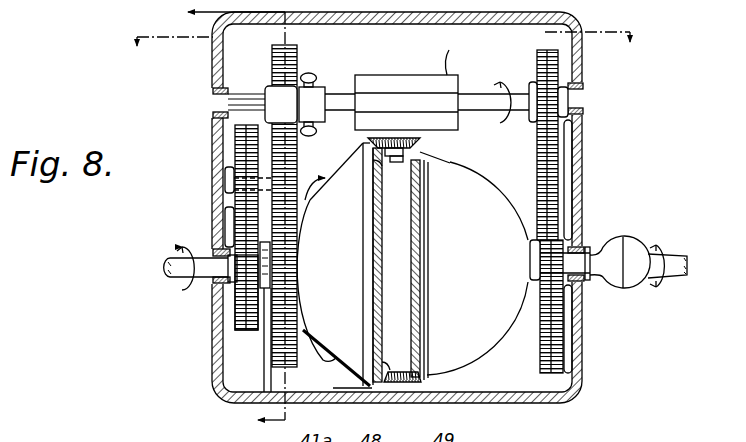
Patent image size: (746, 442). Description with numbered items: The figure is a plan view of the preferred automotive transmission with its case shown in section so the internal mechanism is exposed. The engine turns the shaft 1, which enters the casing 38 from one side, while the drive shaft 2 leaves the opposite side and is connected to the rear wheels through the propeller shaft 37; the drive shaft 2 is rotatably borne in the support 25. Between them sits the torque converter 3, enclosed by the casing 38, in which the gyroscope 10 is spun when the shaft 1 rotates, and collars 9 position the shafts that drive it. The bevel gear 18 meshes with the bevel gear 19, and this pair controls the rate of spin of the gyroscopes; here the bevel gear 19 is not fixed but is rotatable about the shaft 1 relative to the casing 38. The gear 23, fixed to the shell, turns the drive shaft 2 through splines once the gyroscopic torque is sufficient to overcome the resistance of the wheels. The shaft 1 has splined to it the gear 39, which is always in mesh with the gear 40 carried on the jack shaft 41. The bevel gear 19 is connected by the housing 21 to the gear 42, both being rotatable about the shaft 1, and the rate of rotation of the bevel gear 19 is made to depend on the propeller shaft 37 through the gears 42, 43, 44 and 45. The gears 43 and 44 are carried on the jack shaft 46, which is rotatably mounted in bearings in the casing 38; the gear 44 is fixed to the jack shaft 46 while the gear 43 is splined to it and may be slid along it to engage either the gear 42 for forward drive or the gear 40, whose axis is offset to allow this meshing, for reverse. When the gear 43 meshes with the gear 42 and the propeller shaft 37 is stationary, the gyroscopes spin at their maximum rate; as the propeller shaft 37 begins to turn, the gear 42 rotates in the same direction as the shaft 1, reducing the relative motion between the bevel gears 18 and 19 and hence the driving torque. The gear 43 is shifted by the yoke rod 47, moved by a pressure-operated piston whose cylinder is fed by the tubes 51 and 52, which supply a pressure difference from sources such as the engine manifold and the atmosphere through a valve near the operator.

The shaft 1 is at (172, 254).
The drive shaft 2 is at (596, 246).
The torque converter 3 is at (497, 185).
The collars 9 is at (382, 48).
The gyroscope 10 is at (234, 227).
The bevel gear 18 is at (420, 142).
The bevel gear 19 is at (378, 280).
The housing 21 is at (337, 279).
The gear 23 is at (420, 325).
The support 25 is at (263, 365).
The propeller shaft 37 is at (680, 262).
The casing 38 is at (587, 353).
The gear 39 is at (240, 317).
The gear 40 is at (247, 143).
The jack shaft 41 is at (232, 193).
The gear 42 is at (300, 332).
The gear 43 is at (275, 58).
The gear 44 is at (548, 60).
The gear 45 is at (557, 197).
The jack shaft 46 is at (335, 96).
The yoke rod 47 is at (310, 73).
The tube 51 is at (366, 75).
The tube 52 is at (450, 60).